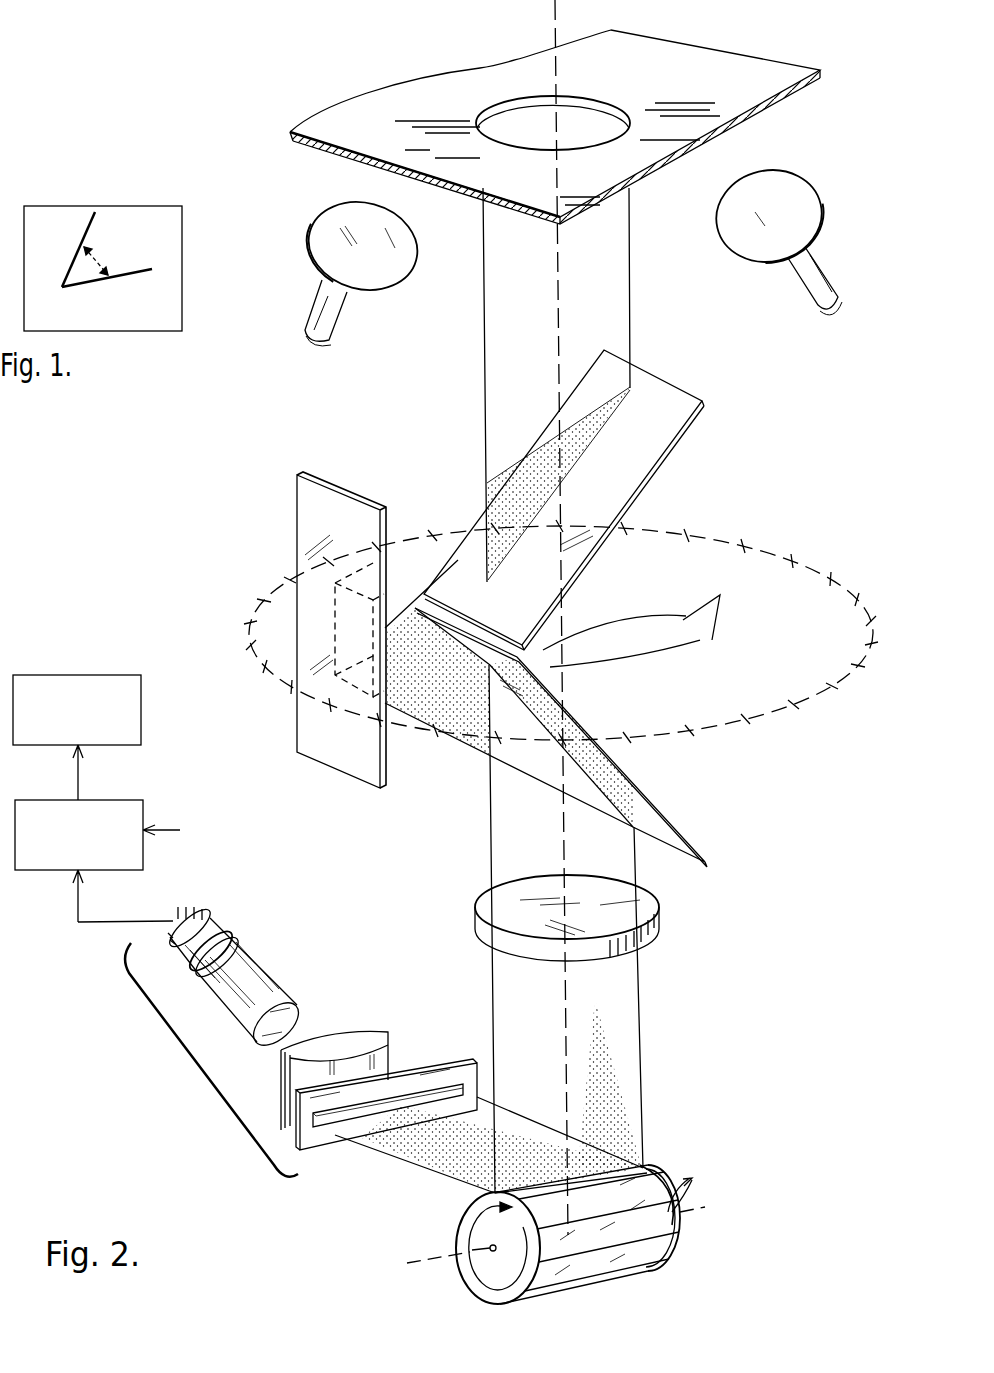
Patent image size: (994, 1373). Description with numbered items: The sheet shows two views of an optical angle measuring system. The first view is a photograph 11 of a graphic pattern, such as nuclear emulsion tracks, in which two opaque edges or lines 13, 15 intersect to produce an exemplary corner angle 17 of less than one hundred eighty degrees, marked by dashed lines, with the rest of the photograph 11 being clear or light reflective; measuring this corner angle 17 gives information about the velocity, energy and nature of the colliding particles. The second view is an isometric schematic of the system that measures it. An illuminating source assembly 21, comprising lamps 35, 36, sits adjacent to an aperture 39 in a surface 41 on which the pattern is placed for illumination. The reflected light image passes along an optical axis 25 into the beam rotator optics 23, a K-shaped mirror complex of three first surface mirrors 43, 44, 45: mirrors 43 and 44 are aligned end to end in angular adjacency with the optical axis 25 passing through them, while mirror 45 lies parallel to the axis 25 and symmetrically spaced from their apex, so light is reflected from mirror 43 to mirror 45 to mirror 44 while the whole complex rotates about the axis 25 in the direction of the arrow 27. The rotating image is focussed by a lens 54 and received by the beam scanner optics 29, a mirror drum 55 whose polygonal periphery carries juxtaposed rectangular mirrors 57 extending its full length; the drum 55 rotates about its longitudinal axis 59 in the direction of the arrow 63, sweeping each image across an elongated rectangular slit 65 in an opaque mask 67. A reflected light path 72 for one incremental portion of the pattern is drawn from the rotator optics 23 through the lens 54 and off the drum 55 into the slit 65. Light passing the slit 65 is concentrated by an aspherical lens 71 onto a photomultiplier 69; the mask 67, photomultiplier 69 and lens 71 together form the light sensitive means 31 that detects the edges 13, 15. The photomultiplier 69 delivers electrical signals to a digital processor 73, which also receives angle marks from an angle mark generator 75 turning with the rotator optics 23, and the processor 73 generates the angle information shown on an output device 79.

In FIG. 1, the photograph 11 is at (182, 305).
In FIG. 1, the opaque edge or line 13 is at (70, 262).
In FIG. 1, the opaque edge or line 15 is at (142, 272).
In FIG. 1, the corner angle 17 is at (98, 260).
In FIG. 2, the illuminating source assembly 21 is at (835, 238).
In FIG. 2, the beam rotator optics 23 is at (582, 624).
In FIG. 2, the optical axis 25 is at (553, 13).
In FIG. 2, the arrow 27 is at (627, 648).
In FIG. 2, the beam scanner optics 29 is at (701, 1246).
In FIG. 2, the light sensitive means 31 is at (188, 1064).
In FIG. 2, the lamp 35 is at (388, 277).
In FIG. 2, the lamp 36 is at (771, 265).
In FIG. 2, the aperture 39 is at (583, 115).
In FIG. 2, the surface 41 is at (727, 63).
In FIG. 2, the first surface mirror 43 is at (650, 472).
In FIG. 2, the first surface mirror 44 is at (587, 723).
In FIG. 2, the first surface mirror 45 is at (328, 487).
In FIG. 2, the lens 54 is at (661, 903).
In FIG. 2, the mirror drum 55 is at (460, 1225).
In FIG. 2, the rectangular mirror 57 is at (672, 1190).
In FIG. 2, the longitudinal axis 59 is at (708, 1208).
In FIG. 2, the arrow 63 is at (483, 1278).
In FIG. 2, the slit 65 is at (347, 1110).
In FIG. 2, the opaque mask 67 is at (293, 1143).
In FIG. 2, the photomultiplier 69 is at (247, 1002).
In FIG. 2, the lens 71 is at (281, 1070).
In FIG. 2, the reflected light path 72 is at (644, 1027).
In FIG. 2, the digital processor 73 is at (115, 808).
In FIG. 2, the angle mark generator 75 is at (236, 834).
In FIG. 2, the output device 79 is at (47, 675).